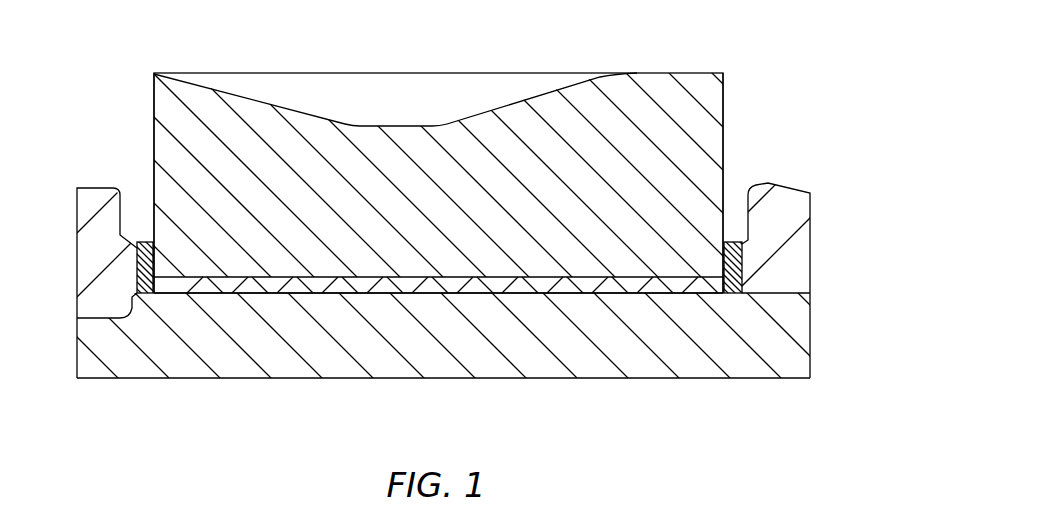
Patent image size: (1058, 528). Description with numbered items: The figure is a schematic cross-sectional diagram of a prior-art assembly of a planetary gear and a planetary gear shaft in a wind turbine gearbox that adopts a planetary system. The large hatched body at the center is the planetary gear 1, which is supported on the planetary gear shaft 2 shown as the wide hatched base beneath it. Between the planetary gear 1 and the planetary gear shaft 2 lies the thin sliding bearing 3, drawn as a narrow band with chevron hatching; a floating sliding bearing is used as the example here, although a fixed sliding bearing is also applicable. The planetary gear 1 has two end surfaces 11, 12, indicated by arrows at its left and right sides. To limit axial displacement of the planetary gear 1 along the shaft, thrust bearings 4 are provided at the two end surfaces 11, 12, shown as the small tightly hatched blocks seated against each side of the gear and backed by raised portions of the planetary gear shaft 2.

The planetary gear 1 is at (597, 115).
The end surface 11 is at (145, 147).
The end surface 12 is at (736, 148).
The planetary gear shaft 2 is at (376, 353).
The sliding bearing 3 is at (635, 285).
The thrust bearing 4 is at (137, 273).